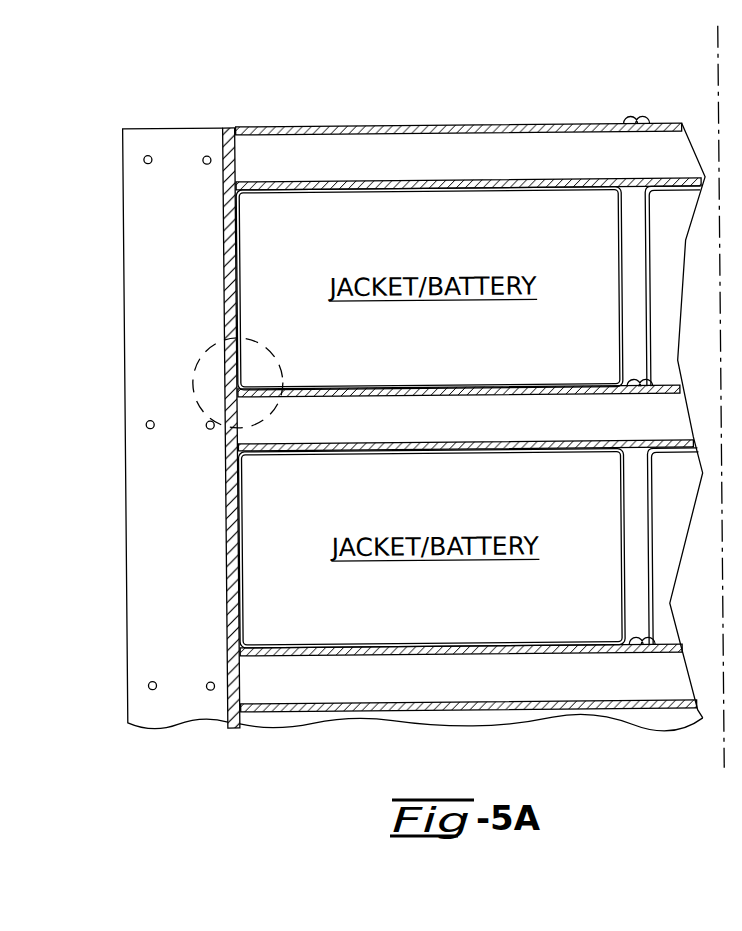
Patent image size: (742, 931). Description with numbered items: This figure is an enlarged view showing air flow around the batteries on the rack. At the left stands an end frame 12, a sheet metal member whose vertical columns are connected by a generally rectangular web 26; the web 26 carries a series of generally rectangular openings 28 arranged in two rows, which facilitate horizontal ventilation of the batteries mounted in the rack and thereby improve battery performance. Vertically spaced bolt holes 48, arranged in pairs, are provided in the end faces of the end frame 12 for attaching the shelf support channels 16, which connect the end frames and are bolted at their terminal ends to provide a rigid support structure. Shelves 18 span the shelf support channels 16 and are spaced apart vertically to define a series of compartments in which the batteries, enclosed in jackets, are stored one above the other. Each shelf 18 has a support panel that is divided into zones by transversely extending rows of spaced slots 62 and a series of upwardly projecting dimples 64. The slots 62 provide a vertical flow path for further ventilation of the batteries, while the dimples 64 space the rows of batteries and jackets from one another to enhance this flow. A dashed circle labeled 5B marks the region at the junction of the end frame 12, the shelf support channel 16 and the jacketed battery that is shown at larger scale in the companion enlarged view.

The end frame 12 is at (172, 120).
The bolt holes 48 is at (208, 155).
The shelf support channel 16 is at (276, 160).
The shelf 18 is at (333, 118).
The dimples 64 is at (632, 118).
The slots 62 is at (633, 136).
The openings 28 is at (225, 246).
The web 26 is at (225, 371).
The detail area of FIG. 5B is at (210, 345).